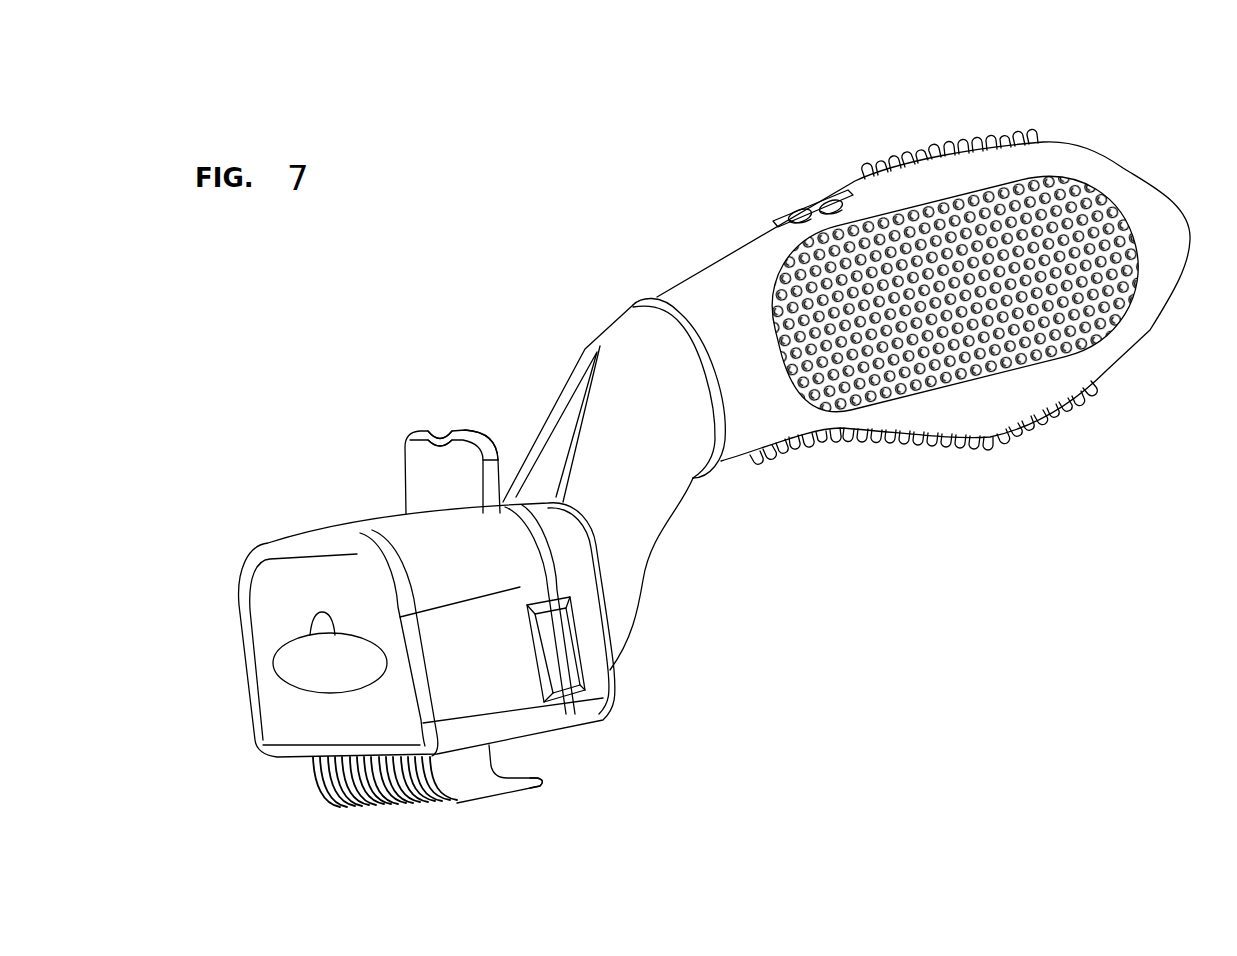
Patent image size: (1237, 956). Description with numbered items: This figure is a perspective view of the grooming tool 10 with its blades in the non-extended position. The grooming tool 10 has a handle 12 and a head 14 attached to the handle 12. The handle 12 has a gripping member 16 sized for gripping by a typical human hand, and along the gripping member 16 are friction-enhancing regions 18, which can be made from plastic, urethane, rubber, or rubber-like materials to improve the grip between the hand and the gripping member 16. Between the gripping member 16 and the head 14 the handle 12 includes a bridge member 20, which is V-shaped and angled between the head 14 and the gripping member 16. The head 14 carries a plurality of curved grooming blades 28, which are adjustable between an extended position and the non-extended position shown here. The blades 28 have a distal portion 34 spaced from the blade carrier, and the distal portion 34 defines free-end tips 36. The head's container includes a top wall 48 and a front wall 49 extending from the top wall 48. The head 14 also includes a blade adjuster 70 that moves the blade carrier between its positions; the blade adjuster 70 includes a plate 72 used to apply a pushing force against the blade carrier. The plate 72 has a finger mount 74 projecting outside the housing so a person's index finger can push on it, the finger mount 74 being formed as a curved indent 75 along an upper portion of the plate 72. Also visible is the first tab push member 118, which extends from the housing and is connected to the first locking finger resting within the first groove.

The grooming tool 10 is at (687, 41).
The handle 12 is at (766, 142).
The head 14 is at (269, 432).
The gripping member 16 is at (1062, 151).
The friction-enhancing regions 18 is at (933, 140).
The bridge member 20 is at (653, 548).
The grooming blades 28 is at (455, 802).
The distal portion 34 is at (500, 800).
The free-end tips 36 is at (543, 779).
The top wall 48 is at (346, 531).
The front wall 49 is at (258, 636).
The blade adjuster 70 is at (417, 474).
The plate 72 is at (468, 456).
The finger mount 74 is at (439, 433).
The curved indent 75 is at (443, 438).
The first tab push member 118 is at (553, 660).